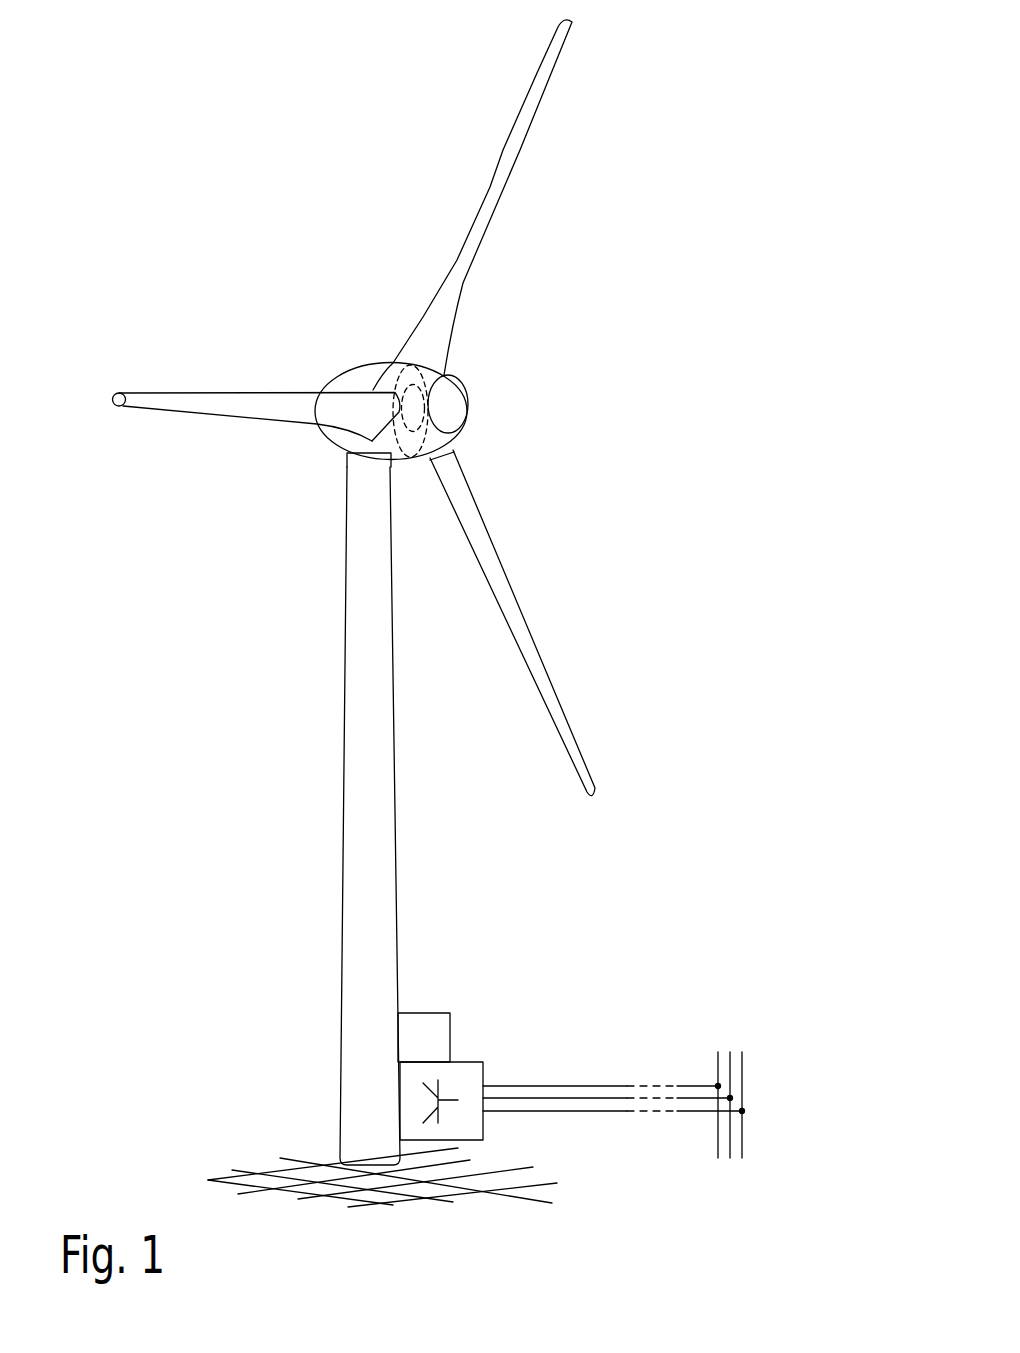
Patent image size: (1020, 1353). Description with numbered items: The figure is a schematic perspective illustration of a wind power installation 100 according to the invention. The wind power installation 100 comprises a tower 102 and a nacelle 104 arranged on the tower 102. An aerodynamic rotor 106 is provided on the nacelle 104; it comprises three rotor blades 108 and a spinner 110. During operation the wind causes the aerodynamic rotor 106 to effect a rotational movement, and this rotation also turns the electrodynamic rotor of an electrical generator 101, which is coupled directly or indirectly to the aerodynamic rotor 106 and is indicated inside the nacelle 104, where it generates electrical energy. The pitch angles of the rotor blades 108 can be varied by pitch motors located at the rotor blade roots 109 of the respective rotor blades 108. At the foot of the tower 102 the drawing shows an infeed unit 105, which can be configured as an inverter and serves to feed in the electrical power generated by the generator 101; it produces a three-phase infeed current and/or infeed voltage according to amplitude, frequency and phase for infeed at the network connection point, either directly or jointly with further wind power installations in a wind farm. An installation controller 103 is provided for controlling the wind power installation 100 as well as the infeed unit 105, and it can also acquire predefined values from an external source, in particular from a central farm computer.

The wind power installation 100 is at (270, 558).
The electrical generator 101 is at (412, 365).
The tower 102 is at (390, 908).
The installation controller 103 is at (440, 1028).
The nacelle 104 is at (353, 372).
The infeed unit 105 is at (483, 1132).
The aerodynamic rotor 106 is at (625, 292).
The rotor blade 108 is at (493, 192).
The rotor blade root 109 is at (456, 446).
The spinner 110 is at (456, 403).